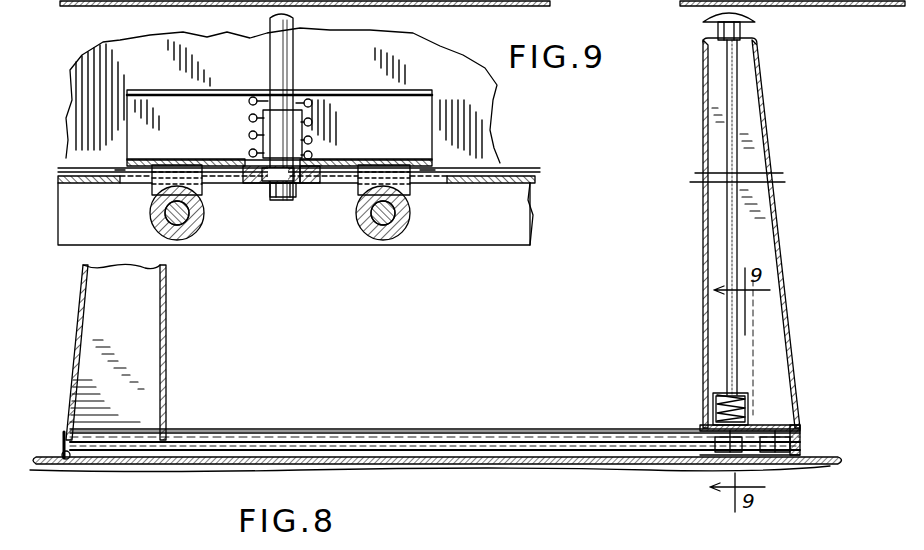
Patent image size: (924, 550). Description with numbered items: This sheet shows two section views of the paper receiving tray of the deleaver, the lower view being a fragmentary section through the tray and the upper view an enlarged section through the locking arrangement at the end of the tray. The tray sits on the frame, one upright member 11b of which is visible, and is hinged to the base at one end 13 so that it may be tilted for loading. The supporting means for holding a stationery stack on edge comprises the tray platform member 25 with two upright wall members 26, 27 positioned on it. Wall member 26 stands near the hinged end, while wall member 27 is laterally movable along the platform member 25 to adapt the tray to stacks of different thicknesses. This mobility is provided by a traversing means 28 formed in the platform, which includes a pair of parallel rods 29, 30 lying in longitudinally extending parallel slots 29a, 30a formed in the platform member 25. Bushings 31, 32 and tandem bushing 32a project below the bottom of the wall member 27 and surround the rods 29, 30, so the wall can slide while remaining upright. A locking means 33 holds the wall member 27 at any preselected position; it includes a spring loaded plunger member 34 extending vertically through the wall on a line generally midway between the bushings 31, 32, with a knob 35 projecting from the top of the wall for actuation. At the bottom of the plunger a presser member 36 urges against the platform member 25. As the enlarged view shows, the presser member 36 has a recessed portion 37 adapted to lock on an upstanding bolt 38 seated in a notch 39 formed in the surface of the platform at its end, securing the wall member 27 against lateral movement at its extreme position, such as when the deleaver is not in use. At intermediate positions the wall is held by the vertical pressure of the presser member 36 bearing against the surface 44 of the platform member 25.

In FIG. 8, the upright member 11b is at (515, 466).
In FIG. 8, the hinged end 13 is at (68, 462).
In FIG. 9, the tray platform member 25 is at (533, 181).
In FIG. 8, the tray platform member 25 is at (352, 434).
In FIG. 8, the upright wall member 26 is at (168, 333).
In FIG. 9, the upright wall member 27 is at (490, 100).
In FIG. 8, the upright wall member 27 is at (703, 115).
In FIG. 8, the traversing means 28 is at (646, 411).
In FIG. 9, the rod 29 is at (150, 216).
In FIG. 9, the slot 29a is at (428, 172).
In FIG. 9, the rod 30 is at (395, 222).
In FIG. 8, the rod 30 is at (250, 434).
In FIG. 9, the slot 30a is at (118, 180).
In FIG. 8, the slot 30a is at (430, 434).
In FIG. 9, the bushing 31 is at (150, 190).
In FIG. 9, the bushing 32 is at (410, 215).
In FIG. 8, the bushing 32 is at (712, 455).
In FIG. 8, the bushing 32a is at (787, 452).
In FIG. 9, the locking means 33 is at (233, 127).
In FIG. 8, the locking means 33 is at (749, 383).
In FIG. 9, the plunger member 34 is at (294, 55).
In FIG. 8, the plunger member 34 is at (728, 228).
In FIG. 8, the knob 35 is at (757, 15).
In FIG. 9, the presser member 36 is at (257, 160).
In FIG. 8, the presser member 36 is at (713, 422).
In FIG. 9, the recessed portion 37 is at (291, 198).
In FIG. 9, the upstanding bolt 38 is at (262, 186).
In FIG. 9, the notch 39 is at (340, 178).
In FIG. 9, the platform surface 44 is at (500, 172).
In FIG. 8, the platform surface 44 is at (525, 432).